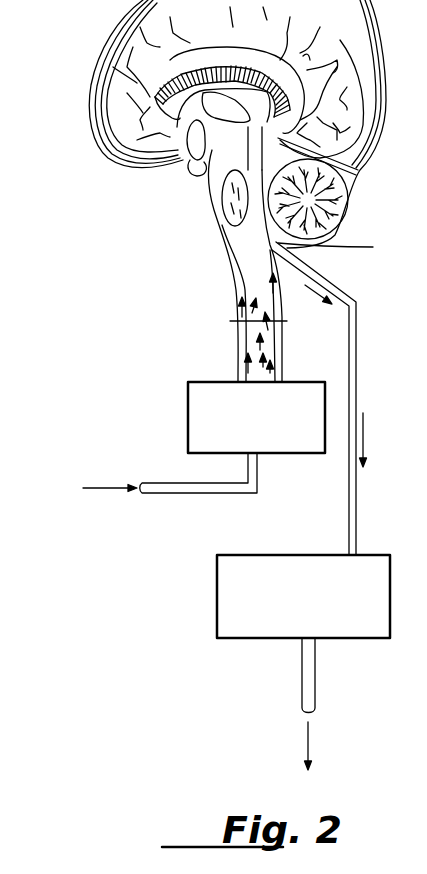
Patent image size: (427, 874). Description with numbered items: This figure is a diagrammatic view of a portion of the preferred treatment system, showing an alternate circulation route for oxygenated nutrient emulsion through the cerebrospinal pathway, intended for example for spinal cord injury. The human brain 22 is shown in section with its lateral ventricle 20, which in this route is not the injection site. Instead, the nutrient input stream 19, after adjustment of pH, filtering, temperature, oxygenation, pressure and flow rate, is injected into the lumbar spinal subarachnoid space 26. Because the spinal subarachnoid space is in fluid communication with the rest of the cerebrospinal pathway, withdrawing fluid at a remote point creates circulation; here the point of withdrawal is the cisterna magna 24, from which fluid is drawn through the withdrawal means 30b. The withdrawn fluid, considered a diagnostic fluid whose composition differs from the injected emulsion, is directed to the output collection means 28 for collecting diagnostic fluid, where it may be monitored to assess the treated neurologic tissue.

The nutrient input stream 19 is at (208, 488).
The lateral ventricle 20 is at (195, 104).
The human brain 22 is at (97, 48).
The cisterna magna 24 is at (337, 248).
The spinal subarachnoid space 26 is at (197, 402).
The output collection means 28 is at (230, 590).
The withdrawal means 30b is at (358, 373).